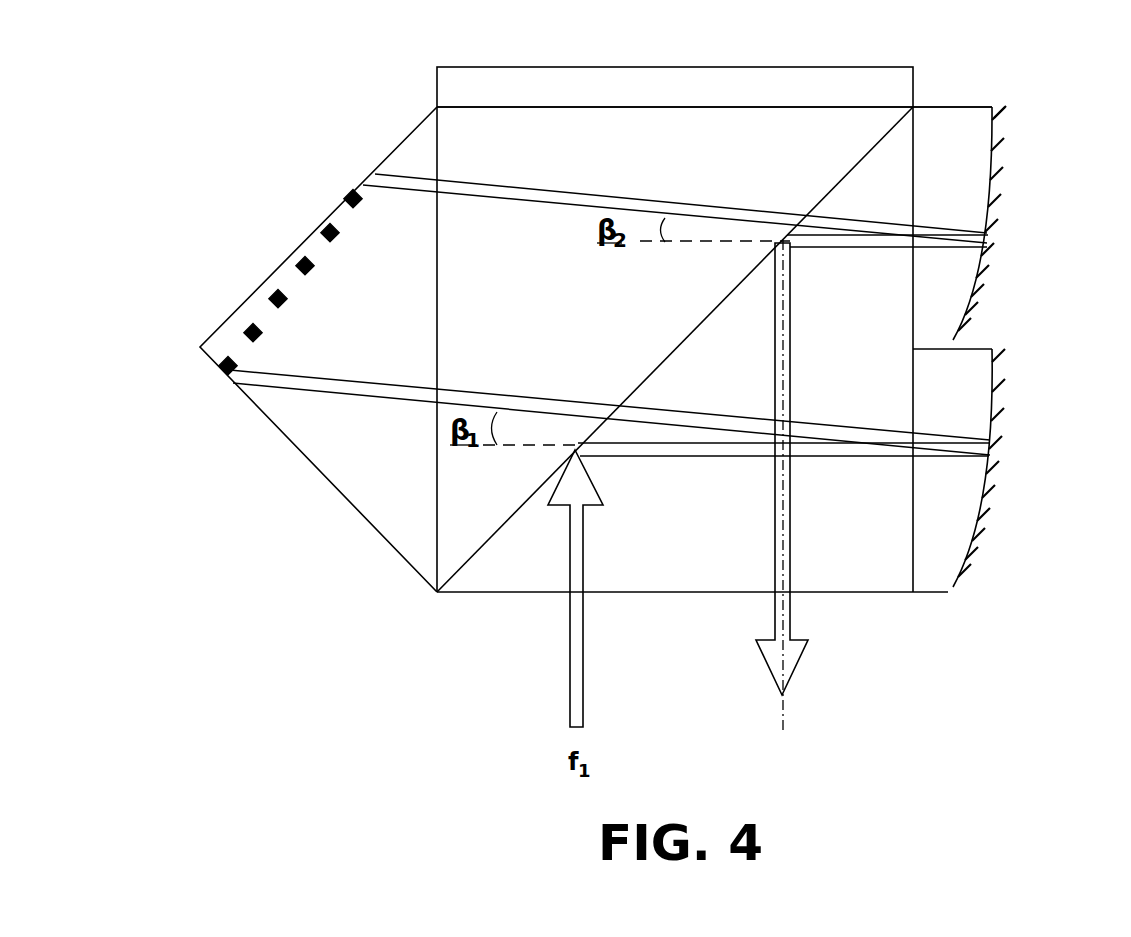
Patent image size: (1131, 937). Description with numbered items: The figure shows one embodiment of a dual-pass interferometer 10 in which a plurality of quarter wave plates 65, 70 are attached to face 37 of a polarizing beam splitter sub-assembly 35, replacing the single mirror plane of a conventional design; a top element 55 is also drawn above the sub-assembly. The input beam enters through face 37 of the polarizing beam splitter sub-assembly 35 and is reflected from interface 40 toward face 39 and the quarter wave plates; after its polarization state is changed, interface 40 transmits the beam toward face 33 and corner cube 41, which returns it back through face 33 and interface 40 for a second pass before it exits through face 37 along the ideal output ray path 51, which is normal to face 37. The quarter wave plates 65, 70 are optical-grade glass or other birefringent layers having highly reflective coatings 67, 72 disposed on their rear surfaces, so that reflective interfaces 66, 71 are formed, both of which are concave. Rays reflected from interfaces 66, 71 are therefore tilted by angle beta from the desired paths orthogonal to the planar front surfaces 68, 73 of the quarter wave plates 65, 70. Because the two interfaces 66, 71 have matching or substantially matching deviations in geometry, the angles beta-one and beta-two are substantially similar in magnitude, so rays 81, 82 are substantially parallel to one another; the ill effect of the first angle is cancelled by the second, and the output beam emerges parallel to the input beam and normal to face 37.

The interferometer 10 is at (228, 78).
The face 33 is at (440, 243).
The polarizing beam splitter sub-assembly 35 is at (843, 560).
The face 37 is at (488, 595).
The face 39 is at (911, 364).
The interface 40 is at (822, 190).
The corner cube 41 is at (266, 244).
The ideal output ray path 51 is at (783, 727).
The top plate 55 is at (768, 67).
The quarter wave plate 65 is at (930, 106).
The reflective interface 66 is at (993, 106).
The highly reflective coating 67 is at (1003, 178).
The planar front surface 68 is at (947, 176).
The quarter wave plate 70 is at (922, 593).
The reflective interface 71 is at (950, 590).
The highly reflective coating 72 is at (1000, 478).
The planar front surface 73 is at (930, 497).
The ray 81 is at (341, 380).
The ray 82 is at (540, 190).